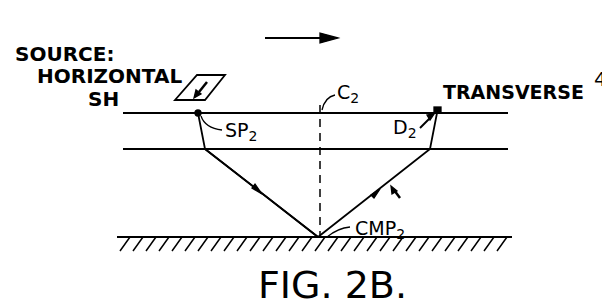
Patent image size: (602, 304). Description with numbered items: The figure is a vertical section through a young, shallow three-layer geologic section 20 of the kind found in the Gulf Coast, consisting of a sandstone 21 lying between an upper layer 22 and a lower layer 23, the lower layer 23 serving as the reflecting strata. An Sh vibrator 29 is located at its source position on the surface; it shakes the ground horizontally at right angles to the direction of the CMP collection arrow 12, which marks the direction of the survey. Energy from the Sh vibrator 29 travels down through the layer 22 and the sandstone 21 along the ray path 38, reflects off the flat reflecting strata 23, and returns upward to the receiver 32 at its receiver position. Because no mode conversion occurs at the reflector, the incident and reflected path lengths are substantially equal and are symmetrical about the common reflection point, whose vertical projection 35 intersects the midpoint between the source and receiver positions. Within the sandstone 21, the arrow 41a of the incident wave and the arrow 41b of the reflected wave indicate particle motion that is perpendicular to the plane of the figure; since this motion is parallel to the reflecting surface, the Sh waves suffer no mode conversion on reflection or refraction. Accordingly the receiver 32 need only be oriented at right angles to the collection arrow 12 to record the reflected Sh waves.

The CMP collection arrow 12 is at (290, 36).
The geologic section 20 is at (486, 178).
The sandstone 21 is at (490, 208).
The layer 22 is at (493, 138).
The reflecting strata 23 is at (545, 256).
The Sh vibrator 29 is at (208, 95).
The receiver 32 is at (419, 90).
The vertical projection 35 is at (322, 188).
The ray path 38 is at (230, 172).
The arrow of incident wave 41a is at (248, 203).
The arrow of reflected wave 41b is at (406, 170).